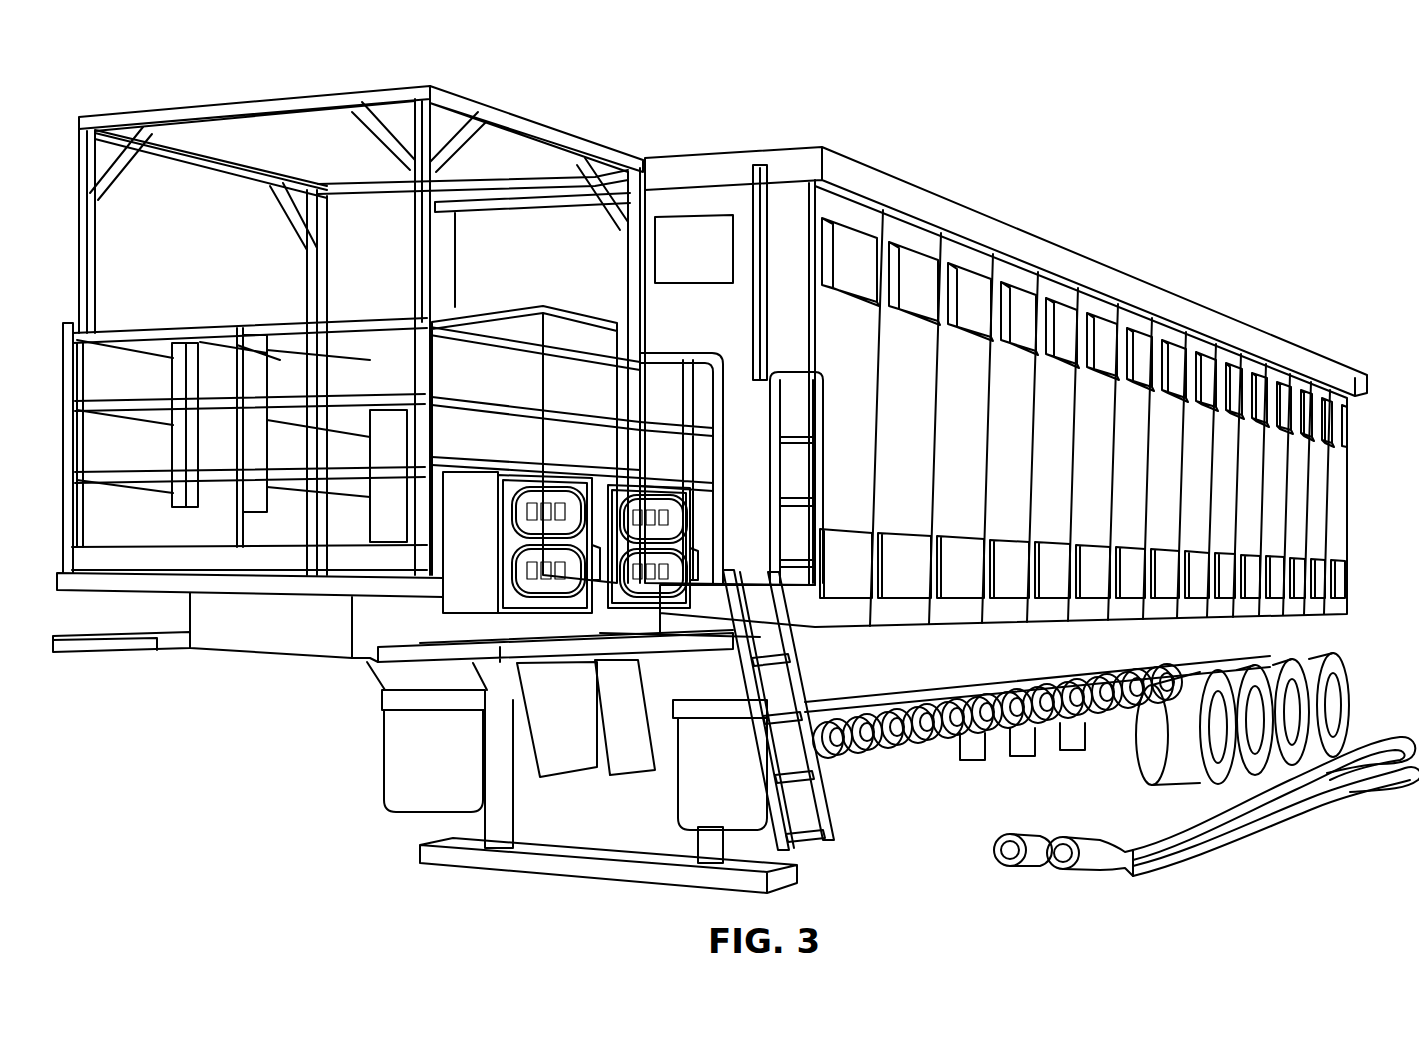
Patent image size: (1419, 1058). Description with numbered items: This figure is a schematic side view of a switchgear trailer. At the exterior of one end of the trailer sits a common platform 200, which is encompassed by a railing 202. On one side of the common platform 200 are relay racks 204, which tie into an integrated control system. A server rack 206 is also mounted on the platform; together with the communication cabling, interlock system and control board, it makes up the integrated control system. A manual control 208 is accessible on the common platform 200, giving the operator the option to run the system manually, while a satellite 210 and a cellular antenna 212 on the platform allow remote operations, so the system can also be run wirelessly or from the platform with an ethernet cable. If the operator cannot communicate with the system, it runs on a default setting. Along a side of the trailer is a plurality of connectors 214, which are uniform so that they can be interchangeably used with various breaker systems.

The common platform 200 is at (293, 594).
The railing 202 is at (200, 332).
The relay racks 204 is at (512, 488).
The server rack 206 is at (537, 303).
The manual control 208 is at (692, 288).
The satellite 210 is at (275, 100).
The cellular antenna 212 is at (750, 163).
The plurality of connectors 214 is at (893, 757).